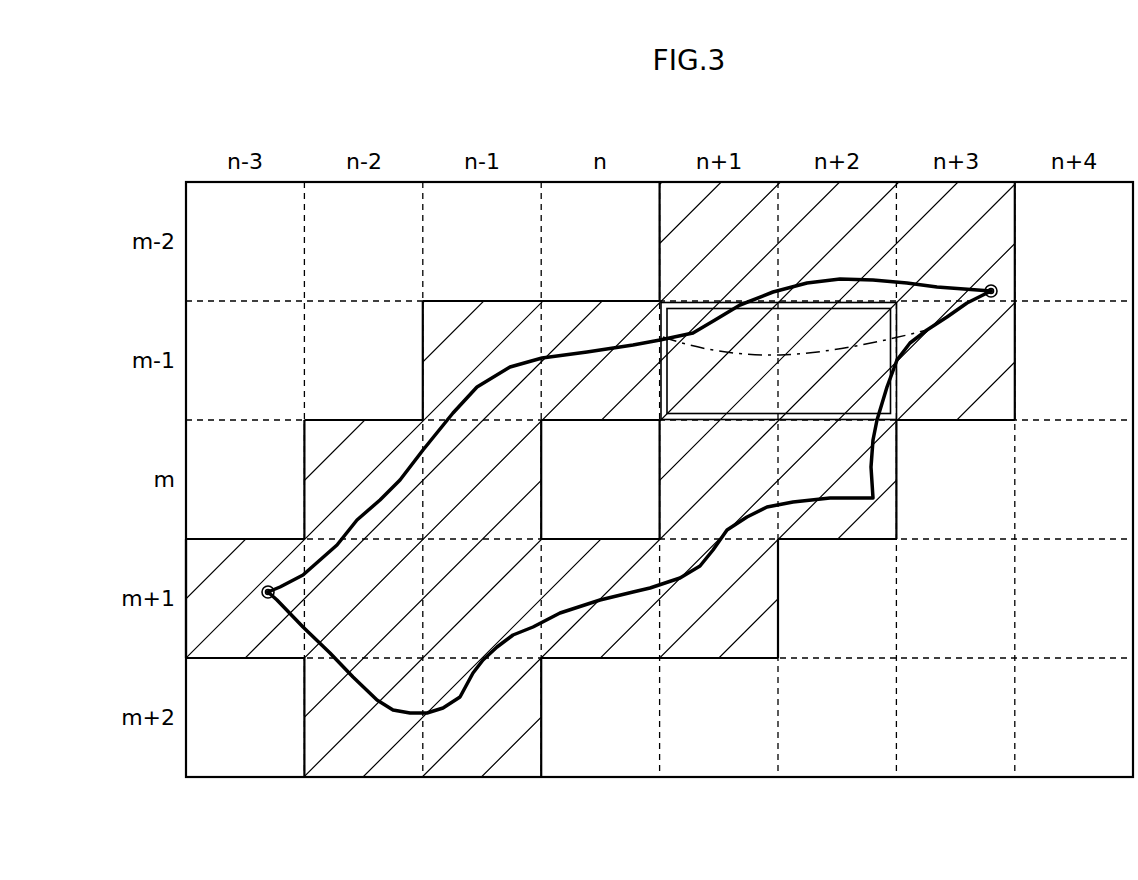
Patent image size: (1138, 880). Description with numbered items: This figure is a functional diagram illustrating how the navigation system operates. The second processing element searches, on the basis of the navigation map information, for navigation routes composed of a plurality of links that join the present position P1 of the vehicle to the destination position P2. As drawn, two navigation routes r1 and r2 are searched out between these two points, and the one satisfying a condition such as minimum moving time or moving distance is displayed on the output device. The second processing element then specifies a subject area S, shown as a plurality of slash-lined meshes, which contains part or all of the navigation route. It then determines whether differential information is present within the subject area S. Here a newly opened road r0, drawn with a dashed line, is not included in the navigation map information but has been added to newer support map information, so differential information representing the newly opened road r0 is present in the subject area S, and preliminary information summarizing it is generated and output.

The subject area S is at (337, 765).
The newly opened road r0 is at (738, 345).
The navigation route r1 is at (453, 412).
The navigation route r2 is at (487, 667).
The present position P1 is at (258, 582).
The destination position P2 is at (1006, 278).